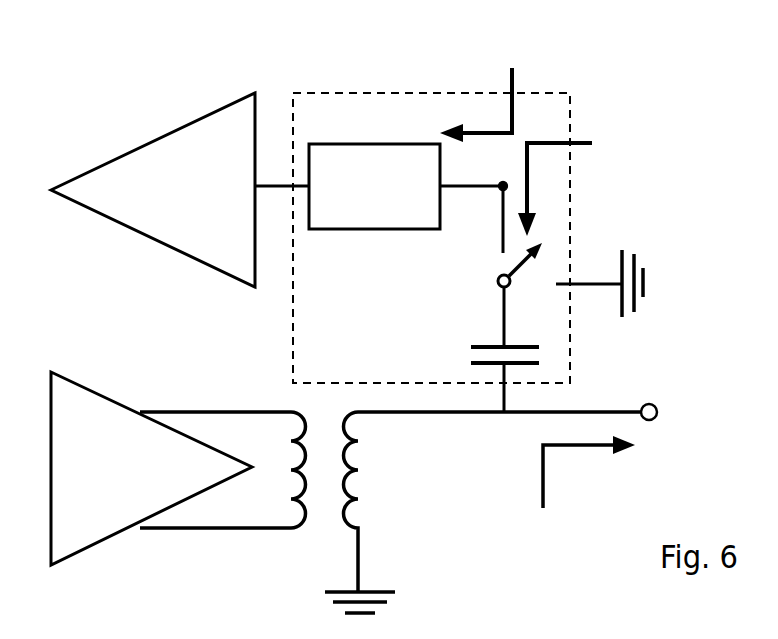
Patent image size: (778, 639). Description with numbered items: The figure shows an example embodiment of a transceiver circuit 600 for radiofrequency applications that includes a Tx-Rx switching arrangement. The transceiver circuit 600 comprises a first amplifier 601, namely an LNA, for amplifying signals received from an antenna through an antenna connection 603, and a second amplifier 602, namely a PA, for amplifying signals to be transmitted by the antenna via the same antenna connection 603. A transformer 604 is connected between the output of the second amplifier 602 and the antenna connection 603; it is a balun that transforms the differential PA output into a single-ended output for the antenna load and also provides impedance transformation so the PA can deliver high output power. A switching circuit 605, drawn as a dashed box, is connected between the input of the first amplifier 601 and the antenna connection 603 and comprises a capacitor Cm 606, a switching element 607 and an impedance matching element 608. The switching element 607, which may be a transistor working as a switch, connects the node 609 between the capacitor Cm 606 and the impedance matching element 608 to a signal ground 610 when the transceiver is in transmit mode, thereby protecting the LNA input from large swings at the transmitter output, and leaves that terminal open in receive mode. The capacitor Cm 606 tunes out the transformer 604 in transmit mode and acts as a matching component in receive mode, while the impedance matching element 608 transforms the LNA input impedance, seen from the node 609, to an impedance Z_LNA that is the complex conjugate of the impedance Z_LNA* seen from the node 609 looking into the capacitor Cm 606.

The transceiver circuit 600 is at (131, 50).
The first amplifier 601 is at (139, 235).
The second amplifier 602 is at (108, 398).
The antenna connection 603 is at (655, 405).
The transformer 604 is at (279, 387).
The switching circuit 605 is at (362, 93).
The capacitor Cm 606 is at (488, 345).
The switching element 607 is at (497, 269).
The impedance matching element 608 is at (393, 196).
The node 609 is at (502, 184).
The signal ground 610 is at (635, 257).